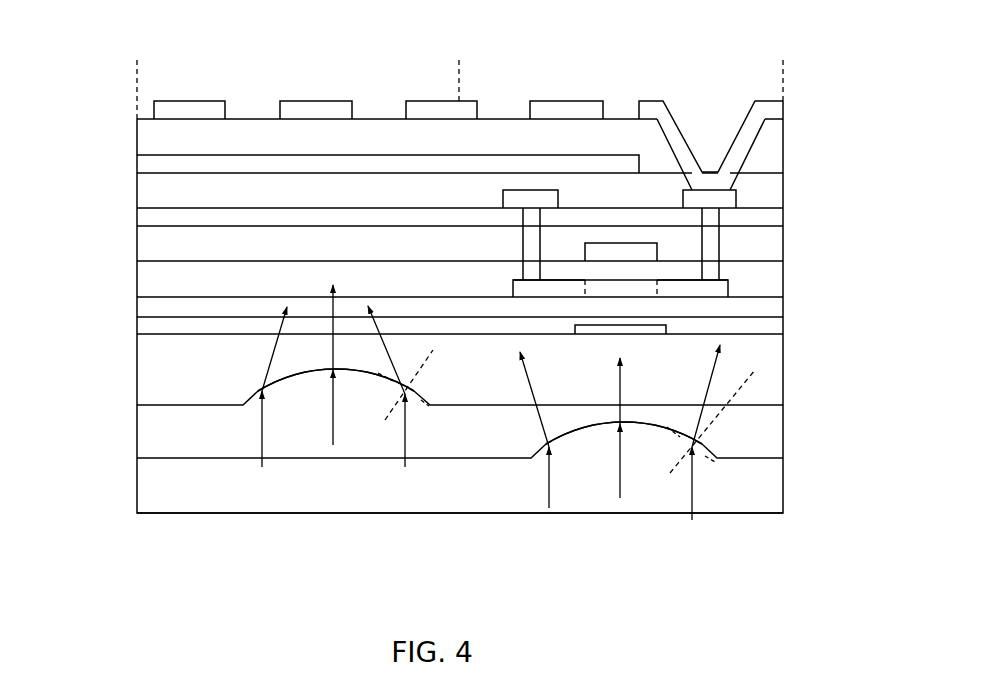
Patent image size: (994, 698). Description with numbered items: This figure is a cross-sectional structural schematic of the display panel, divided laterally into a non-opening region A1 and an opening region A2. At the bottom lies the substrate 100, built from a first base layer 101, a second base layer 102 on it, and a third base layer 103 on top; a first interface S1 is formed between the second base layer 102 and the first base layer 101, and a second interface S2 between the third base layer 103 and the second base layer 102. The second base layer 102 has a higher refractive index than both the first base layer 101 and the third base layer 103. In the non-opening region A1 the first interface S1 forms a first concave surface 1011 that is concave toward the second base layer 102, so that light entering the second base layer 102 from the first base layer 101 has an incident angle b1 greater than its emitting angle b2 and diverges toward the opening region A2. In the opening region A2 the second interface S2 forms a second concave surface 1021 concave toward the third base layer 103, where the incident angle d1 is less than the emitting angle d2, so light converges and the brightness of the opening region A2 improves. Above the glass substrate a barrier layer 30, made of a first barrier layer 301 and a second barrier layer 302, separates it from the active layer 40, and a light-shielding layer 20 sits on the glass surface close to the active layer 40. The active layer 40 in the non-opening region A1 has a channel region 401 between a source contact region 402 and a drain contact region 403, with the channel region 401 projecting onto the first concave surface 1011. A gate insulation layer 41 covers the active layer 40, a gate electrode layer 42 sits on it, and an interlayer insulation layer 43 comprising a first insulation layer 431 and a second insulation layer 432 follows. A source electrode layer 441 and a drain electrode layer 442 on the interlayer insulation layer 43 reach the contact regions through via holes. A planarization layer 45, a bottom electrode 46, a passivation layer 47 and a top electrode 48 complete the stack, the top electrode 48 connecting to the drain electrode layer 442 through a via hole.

The light-shielding layer 20 is at (666, 328).
The barrier layer 30 is at (401, 308).
The first barrier layer 301 is at (137, 329).
The second barrier layer 302 is at (137, 308).
The active layer 40 is at (728, 290).
The channel region 401 is at (633, 292).
The source contact region 402 is at (527, 287).
The drain contact region 403 is at (687, 292).
The gate insulation layer 41 is at (137, 278).
The gate electrode layer 42 is at (657, 257).
The interlayer insulation layer 43 is at (401, 218).
The first insulation layer 431 is at (137, 247).
The second insulation layer 432 is at (137, 218).
The source electrode layer 441 is at (525, 190).
The drain electrode layer 442 is at (736, 200).
The planarization layer 45 is at (137, 190).
The bottom electrode 46 is at (137, 163).
The passivation layer 47 is at (137, 135).
The top electrode 48 is at (782, 110).
The substrate 100 is at (532, 437).
The first base layer 101 is at (502, 484).
The second base layer 102 is at (783, 440).
The third base layer 103 is at (783, 392).
The first concave surface 1011 is at (603, 425).
The second concave surface 1021 is at (302, 376).
The first interface S1 is at (137, 458).
The second interface S2 is at (137, 405).
The non-opening region A1 is at (783, 74).
The opening region A2 is at (459, 74).
The incident angle b1 is at (682, 459).
The emitting angle b2 is at (701, 414).
The incident angle d1 is at (395, 407).
The emitting angle d2 is at (396, 374).